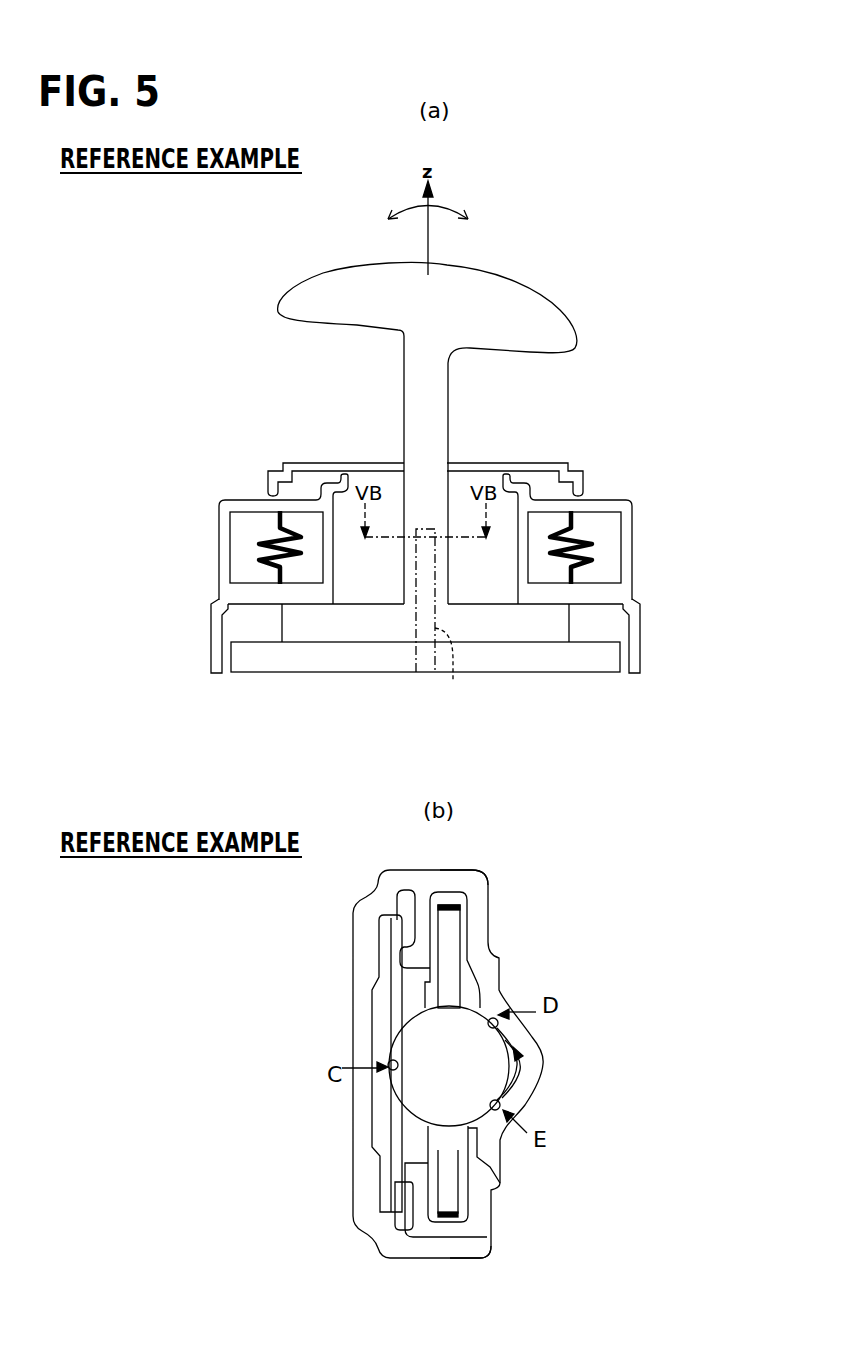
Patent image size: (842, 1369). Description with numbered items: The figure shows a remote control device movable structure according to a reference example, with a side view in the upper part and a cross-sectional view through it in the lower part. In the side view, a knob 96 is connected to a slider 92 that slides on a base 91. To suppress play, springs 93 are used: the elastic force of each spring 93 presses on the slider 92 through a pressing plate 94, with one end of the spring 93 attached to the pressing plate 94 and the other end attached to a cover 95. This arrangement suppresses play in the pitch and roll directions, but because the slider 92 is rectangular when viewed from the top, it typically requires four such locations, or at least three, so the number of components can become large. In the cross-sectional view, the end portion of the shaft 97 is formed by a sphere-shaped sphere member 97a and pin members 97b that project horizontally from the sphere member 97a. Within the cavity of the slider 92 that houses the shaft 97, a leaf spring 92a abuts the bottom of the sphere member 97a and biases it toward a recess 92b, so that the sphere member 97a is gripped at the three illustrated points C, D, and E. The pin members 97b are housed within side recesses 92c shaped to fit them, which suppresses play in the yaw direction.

The base 91 is at (545, 673).
The slider 92 is at (449, 582).
The leaf spring 92a is at (392, 972).
The recess 92b is at (520, 1052).
The side recess 92c is at (450, 893).
The spring 93 is at (262, 541).
The pressing plate 94 is at (242, 582).
The cover 95 is at (243, 500).
The knob 96 is at (500, 273).
The shaft 97 is at (453, 680).
The sphere member 97a is at (513, 1065).
The pin member 97b is at (450, 903).